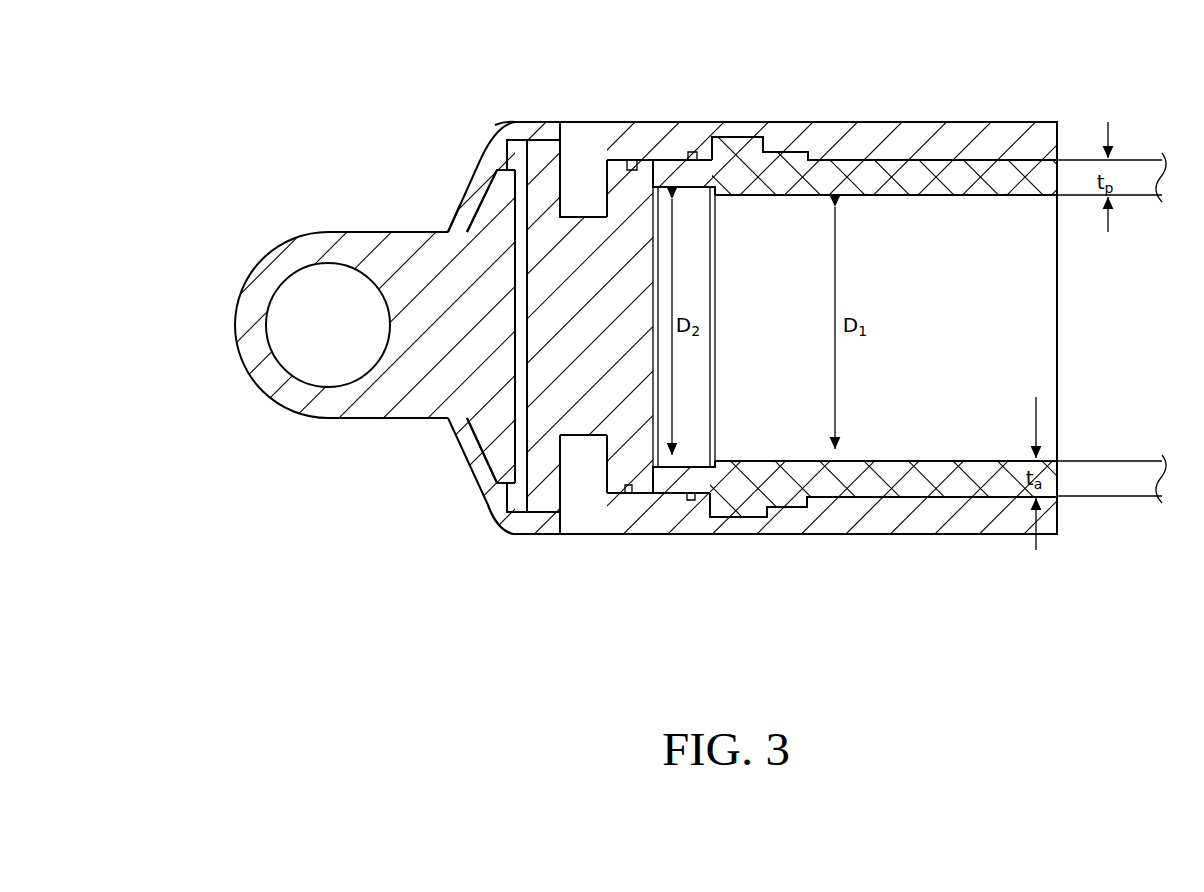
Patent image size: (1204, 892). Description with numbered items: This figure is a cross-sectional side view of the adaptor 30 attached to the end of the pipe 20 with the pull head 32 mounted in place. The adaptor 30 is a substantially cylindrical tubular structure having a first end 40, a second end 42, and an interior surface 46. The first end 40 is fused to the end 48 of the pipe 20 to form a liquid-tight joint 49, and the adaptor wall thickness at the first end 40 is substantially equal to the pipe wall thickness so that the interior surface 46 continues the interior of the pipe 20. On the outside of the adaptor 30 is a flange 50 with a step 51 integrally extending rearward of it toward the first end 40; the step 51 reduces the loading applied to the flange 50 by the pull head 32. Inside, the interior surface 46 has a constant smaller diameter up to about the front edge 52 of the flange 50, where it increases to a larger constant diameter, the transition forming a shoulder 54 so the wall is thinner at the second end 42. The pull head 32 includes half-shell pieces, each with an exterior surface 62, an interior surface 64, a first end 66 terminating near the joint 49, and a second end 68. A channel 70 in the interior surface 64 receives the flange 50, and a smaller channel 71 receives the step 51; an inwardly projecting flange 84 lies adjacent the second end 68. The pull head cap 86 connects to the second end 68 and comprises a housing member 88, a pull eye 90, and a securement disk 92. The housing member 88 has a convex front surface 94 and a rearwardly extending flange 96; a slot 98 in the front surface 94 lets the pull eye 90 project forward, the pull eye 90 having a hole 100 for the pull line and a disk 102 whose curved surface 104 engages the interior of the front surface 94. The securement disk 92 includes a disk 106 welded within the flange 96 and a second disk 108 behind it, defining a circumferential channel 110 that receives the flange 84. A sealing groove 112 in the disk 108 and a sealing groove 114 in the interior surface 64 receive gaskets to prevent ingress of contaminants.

The pipe 20 is at (1143, 470).
The adaptor 30 is at (930, 452).
The pull head 32 is at (665, 543).
The first end 40 is at (1023, 172).
The second end 42 is at (673, 167).
The interior surface 46 is at (967, 197).
The end 48 is at (1053, 477).
The joint 49 is at (1053, 180).
The flange 50 is at (747, 508).
The step 51 is at (805, 140).
The front edge 52 is at (708, 157).
The shoulder 54 is at (710, 222).
The exterior surface 62 is at (910, 520).
The interior surface 64 is at (975, 506).
The first end 66 is at (1050, 132).
The second end 68 is at (565, 160).
The channel 70 is at (727, 167).
The channel 71 is at (795, 150).
The inwardly projecting flange 84 is at (582, 462).
The pull head cap 86 is at (487, 530).
The housing member 88 is at (485, 167).
The pull eye 90 is at (300, 401).
The securement disk 92 is at (546, 421).
The front surface 94 is at (480, 502).
The flange 96 is at (512, 130).
The slot 98 is at (448, 232).
The hole 100 is at (283, 325).
The disk 102 is at (497, 205).
The curved surface 104 is at (470, 448).
The disk 106 is at (543, 162).
The second disk 108 is at (606, 497).
The circumferential channel 110 is at (598, 214).
The sealing groove 112 is at (628, 457).
The sealing groove 114 is at (690, 150).